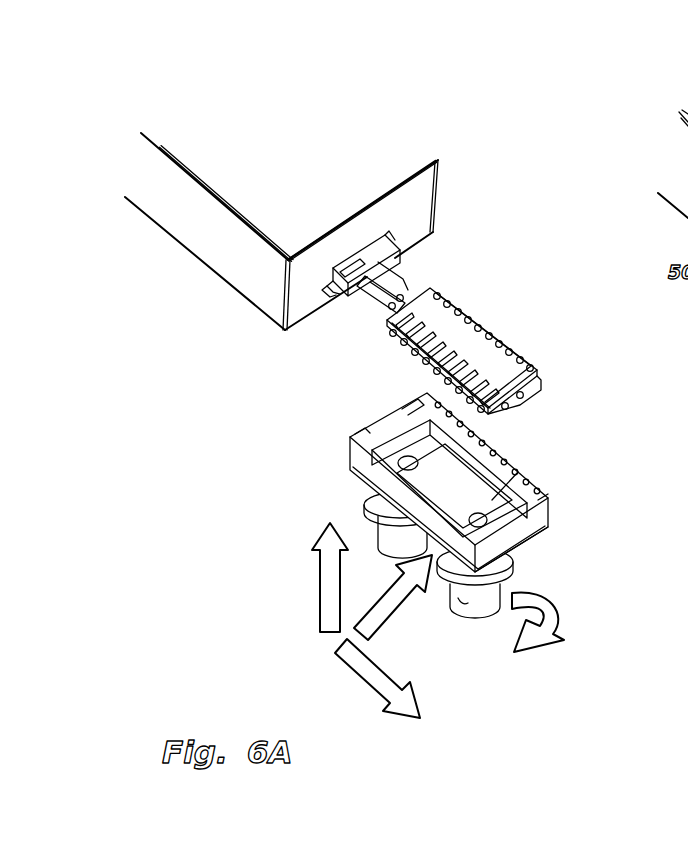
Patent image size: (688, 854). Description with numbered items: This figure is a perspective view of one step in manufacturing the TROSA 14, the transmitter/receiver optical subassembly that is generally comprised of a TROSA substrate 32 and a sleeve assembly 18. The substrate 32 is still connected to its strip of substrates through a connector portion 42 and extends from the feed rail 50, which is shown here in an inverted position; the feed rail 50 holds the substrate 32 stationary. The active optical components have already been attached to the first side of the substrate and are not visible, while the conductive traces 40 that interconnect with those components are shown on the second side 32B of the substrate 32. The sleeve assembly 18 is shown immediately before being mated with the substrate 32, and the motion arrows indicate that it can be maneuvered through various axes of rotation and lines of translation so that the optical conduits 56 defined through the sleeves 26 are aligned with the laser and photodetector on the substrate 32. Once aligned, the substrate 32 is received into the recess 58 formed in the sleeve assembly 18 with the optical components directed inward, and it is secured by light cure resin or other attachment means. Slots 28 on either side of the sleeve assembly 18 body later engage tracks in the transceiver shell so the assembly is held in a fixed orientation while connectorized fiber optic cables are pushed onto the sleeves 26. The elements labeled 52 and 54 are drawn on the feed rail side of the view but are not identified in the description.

The TROSA 14 is at (588, 400).
The sleeve assembly 18 is at (460, 491).
The sleeves 26 is at (387, 547).
The slots 28 is at (510, 530).
The TROSA substrate 32 is at (439, 326).
The second side of the substrate 32B is at (537, 368).
The conductive traces 40 is at (387, 330).
The connector portion 42 is at (400, 283).
The feed rail 50 is at (243, 205).
The connector opening 52 is at (370, 243).
The latch 54 is at (332, 288).
The optical conduits 56 is at (469, 515).
The recess 58 is at (535, 485).